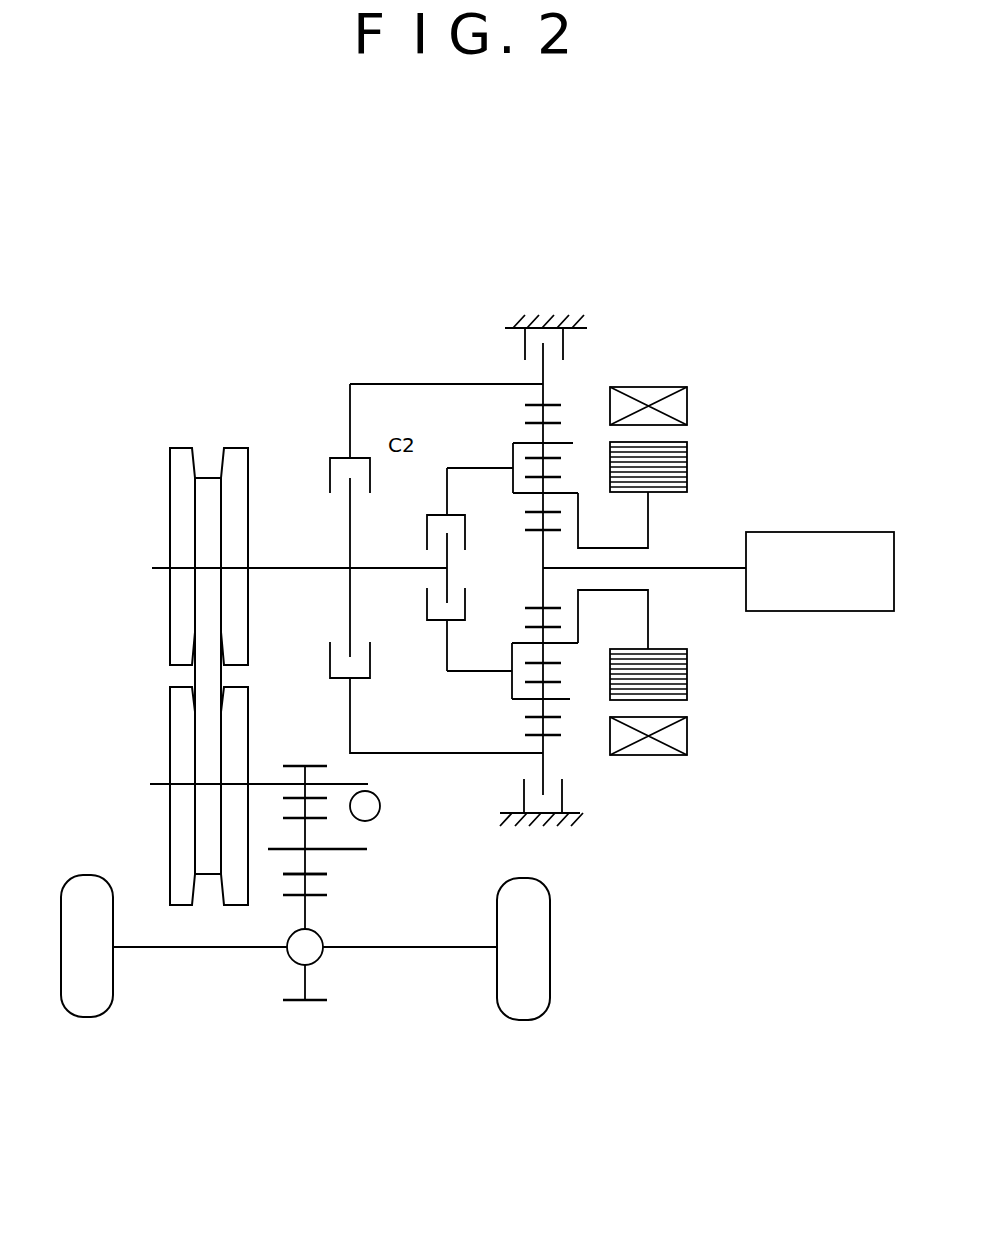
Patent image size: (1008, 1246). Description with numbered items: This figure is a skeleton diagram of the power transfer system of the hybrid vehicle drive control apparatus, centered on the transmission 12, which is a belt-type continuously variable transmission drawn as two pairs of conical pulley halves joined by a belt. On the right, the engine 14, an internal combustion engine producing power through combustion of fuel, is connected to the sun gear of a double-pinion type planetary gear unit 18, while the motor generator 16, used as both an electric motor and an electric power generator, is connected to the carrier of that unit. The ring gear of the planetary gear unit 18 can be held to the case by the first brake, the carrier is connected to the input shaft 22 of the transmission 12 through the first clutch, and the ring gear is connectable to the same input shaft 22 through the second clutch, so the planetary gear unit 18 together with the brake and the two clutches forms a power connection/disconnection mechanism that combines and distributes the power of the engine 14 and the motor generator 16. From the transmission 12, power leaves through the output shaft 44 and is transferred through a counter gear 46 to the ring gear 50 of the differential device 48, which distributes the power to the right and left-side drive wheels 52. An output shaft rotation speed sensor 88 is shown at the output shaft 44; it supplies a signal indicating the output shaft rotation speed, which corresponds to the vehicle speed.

The transmission 12 is at (150, 460).
The engine 14 is at (825, 542).
The motor generator 16 is at (679, 365).
The planetary gear unit 18 is at (493, 366).
The input shaft 22 is at (285, 566).
The output shaft 44 is at (270, 784).
The counter gear 46 is at (322, 872).
The differential device 48 is at (298, 955).
The ring gear 50 is at (316, 1002).
The drive wheels 52 is at (104, 917).
The output shaft rotation speed sensor 88 is at (376, 800).